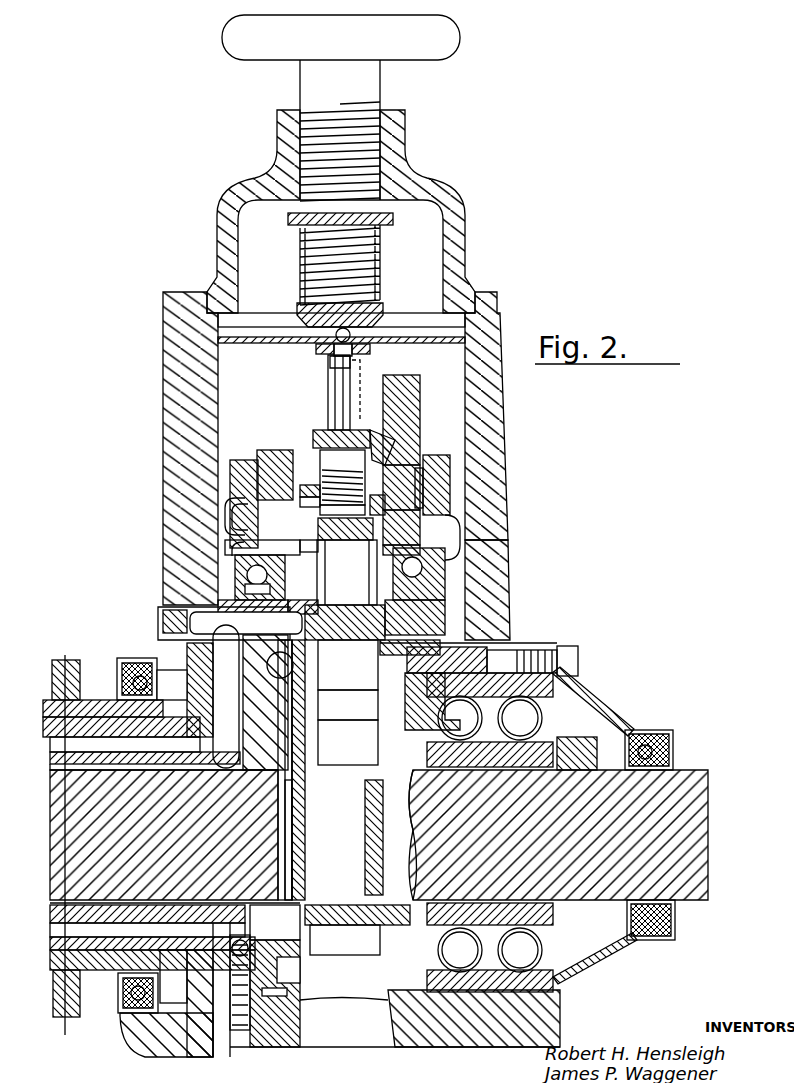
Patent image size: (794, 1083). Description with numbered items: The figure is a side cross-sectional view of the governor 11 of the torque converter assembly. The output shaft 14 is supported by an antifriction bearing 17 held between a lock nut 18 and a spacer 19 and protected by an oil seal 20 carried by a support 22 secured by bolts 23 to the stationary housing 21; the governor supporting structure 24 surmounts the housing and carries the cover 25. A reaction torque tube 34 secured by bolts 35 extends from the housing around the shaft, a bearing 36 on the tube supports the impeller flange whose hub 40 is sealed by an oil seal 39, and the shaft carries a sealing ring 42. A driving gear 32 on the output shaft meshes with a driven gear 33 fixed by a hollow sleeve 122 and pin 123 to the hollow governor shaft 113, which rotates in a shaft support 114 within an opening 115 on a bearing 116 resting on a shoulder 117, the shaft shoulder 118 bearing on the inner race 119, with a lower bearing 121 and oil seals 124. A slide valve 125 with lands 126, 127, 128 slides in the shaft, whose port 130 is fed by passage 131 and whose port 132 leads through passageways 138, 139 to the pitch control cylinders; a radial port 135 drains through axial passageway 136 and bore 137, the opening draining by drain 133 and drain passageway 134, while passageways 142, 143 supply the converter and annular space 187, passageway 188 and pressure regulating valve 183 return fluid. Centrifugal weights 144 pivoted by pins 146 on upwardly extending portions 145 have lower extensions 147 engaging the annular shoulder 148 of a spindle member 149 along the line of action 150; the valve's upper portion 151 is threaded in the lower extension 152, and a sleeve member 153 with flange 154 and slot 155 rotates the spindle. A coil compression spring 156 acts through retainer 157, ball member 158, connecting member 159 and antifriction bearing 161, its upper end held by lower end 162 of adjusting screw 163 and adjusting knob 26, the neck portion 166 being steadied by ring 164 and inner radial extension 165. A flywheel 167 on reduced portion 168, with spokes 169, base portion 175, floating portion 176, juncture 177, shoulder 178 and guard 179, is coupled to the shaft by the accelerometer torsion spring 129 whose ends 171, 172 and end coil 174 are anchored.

The governor unit 11 is at (365, 466).
The output shaft 14 is at (700, 812).
The antifriction bearing 17 is at (545, 696).
The lock nut 18 is at (600, 740).
The spacer 19 is at (395, 926).
The oil seal 20 is at (665, 735).
The stationary housing 21 is at (515, 645).
The support 22 is at (598, 712).
The bolts 23 is at (580, 654).
The governor supporting structure 24 is at (490, 440).
The cover 25 is at (462, 232).
The adjusting knob 26 is at (457, 42).
The driving gear 32 is at (350, 952).
The driven gear 33 is at (386, 850).
The reaction torque tube 34 is at (176, 690).
The bolts 35 is at (270, 976).
The bearing 36 is at (85, 695).
The oil seal 39 is at (190, 682).
The hub 40 is at (106, 700).
The sealing ring 42 is at (250, 940).
The hollow governor shaft 113 is at (262, 790).
The shaft support 114 is at (266, 714).
The opening 115 is at (420, 672).
The antifriction bearing 116 is at (245, 586).
The shoulder 117 is at (420, 570).
The shoulder 118 is at (240, 562).
The inner race 119 is at (466, 534).
The bearing 121 is at (415, 780).
The hollow sleeve 122 is at (292, 830).
The pin 123 is at (283, 800).
The oil seals 124 is at (238, 786).
The slide valve 125 is at (410, 638).
The land 126 is at (348, 705).
The land 127 is at (345, 622).
The land 128 is at (347, 572).
The accelerometer torsion spring 129 is at (305, 546).
The port 130 is at (295, 668).
The passage 131 is at (232, 692).
The port 132 is at (305, 622).
The drain 133 is at (298, 1048).
The drain passageway 134 is at (470, 597).
The radial port 135 is at (415, 615).
The axial passageway 136 is at (348, 667).
The bore 137 is at (348, 742).
The passageway 138 is at (200, 610).
The passageway 139 is at (150, 775).
The passageway 142 is at (215, 917).
The passageway 143 is at (160, 915).
The centrifugal weights 144 is at (408, 400).
The upwardly extending portions 145 is at (439, 490).
The pivot pins 146 is at (410, 470).
The lower extensions 147 is at (380, 503).
The annular shoulder 148 is at (300, 488).
The spindle member 149 is at (328, 408).
The line of action 150 is at (352, 420).
The upper portion 151 is at (320, 510).
The lower extension 152 is at (300, 502).
The sleeve member 153 is at (313, 440).
The flange 154 is at (296, 455).
The slot 155 is at (400, 446).
The coil compression spring 156 is at (393, 280).
The retainer 157 is at (322, 346).
The ball member 158 is at (372, 320).
The connecting member 159 is at (328, 372).
The antifriction bearing 161 is at (362, 350).
The lower end 162 is at (388, 226).
The adjusting screw 163 is at (372, 140).
The ring 164 is at (456, 340).
The inner radial extension 165 is at (268, 343).
The neck portion 166 is at (352, 338).
The flywheel 167 is at (471, 470).
The reduced portion 168 is at (345, 529).
The spokes 169 is at (235, 550).
The end 171 is at (342, 484).
The end 172 is at (401, 554).
The end coil 174 is at (249, 603).
The base portion 175 is at (235, 555).
The floating portion 176 is at (233, 470).
The juncture 177 is at (228, 500).
The shoulder 178 is at (232, 515).
The guard 179 is at (233, 545).
The pressure regulating valve 183 is at (290, 986).
The annular space 187 is at (102, 915).
The passageway 188 is at (252, 960).